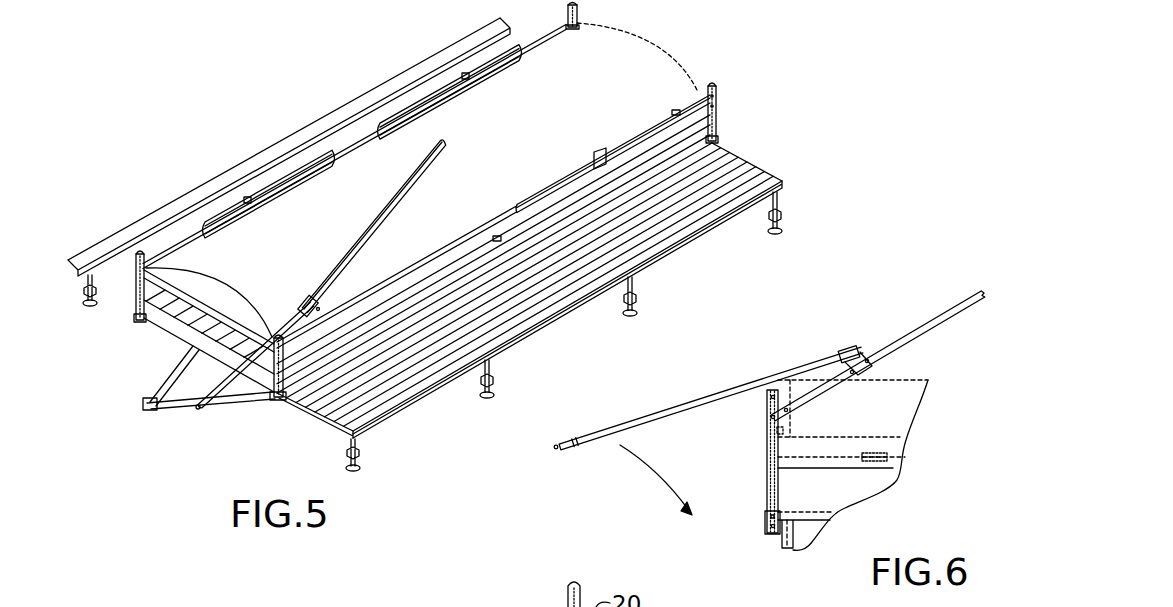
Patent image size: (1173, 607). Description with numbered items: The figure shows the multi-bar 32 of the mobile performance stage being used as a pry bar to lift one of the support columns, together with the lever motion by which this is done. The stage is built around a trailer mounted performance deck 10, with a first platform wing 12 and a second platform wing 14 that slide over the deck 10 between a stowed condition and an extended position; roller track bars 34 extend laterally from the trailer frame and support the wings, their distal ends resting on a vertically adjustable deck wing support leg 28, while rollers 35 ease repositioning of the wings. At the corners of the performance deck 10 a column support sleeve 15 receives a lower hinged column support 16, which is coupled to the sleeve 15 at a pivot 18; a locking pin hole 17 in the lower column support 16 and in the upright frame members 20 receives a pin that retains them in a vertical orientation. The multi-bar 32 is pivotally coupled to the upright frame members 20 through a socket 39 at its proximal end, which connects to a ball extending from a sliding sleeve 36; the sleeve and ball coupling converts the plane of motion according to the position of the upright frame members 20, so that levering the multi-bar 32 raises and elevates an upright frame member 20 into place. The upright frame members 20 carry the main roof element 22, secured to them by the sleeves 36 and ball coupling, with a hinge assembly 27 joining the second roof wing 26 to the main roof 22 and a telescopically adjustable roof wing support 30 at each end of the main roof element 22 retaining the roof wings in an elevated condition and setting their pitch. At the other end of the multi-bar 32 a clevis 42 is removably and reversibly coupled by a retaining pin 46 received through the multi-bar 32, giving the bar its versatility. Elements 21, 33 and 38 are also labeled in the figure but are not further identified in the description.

In FIG. 5, the performance deck 10 is at (163, 333).
In FIG. 5, the first platform wing 12 is at (762, 173).
In FIG. 6, the first platform wing 12 is at (827, 513).
In FIG. 5, the second platform wing 14 is at (192, 195).
In FIG. 5, the column support sleeve 15 is at (140, 322).
In FIG. 6, the column support sleeve 15 is at (767, 522).
In FIG. 5, the lower hinged column support 16 is at (125, 308).
In FIG. 6, the lower hinged column support 16 is at (770, 498).
In FIG. 6, the locking pin hole 17 is at (770, 398).
In FIG. 6, the pivot 18 is at (770, 417).
In FIG. 5, the upright frame members 20 is at (412, 178).
In FIG. 6, the upright frame members 20 is at (917, 335).
In FIG. 6, the pivot 21 is at (788, 408).
In FIG. 5, the main roof element 22 is at (640, 57).
In FIG. 6, the main roof element 22 is at (908, 408).
In FIG. 5, the second roof wing 26 is at (180, 300).
In FIG. 5, the hinge assembly 27 is at (675, 118).
In FIG. 6, the hinge assembly 27 is at (883, 462).
In FIG. 5, the deck wing support leg 28 is at (488, 410).
In FIG. 5, the roof wing support 30 is at (717, 97).
In FIG. 5, the multi-bar 32 is at (233, 218).
In FIG. 6, the multi-bar 32 is at (657, 416).
In FIG. 6, the pin 33 is at (852, 375).
In FIG. 5, the roller track bars 34 is at (643, 272).
In FIG. 5, the rollers 35 is at (320, 425).
In FIG. 5, the sleeve 36 is at (322, 310).
In FIG. 6, the sleeve 36 is at (847, 383).
In FIG. 6, the bracket 38 is at (860, 360).
In FIG. 5, the socket 39 is at (305, 300).
In FIG. 6, the socket 39 is at (847, 353).
In FIG. 5, the clevis 42 is at (200, 406).
In FIG. 6, the clevis 42 is at (562, 451).
In FIG. 6, the retaining pin 46 is at (577, 449).